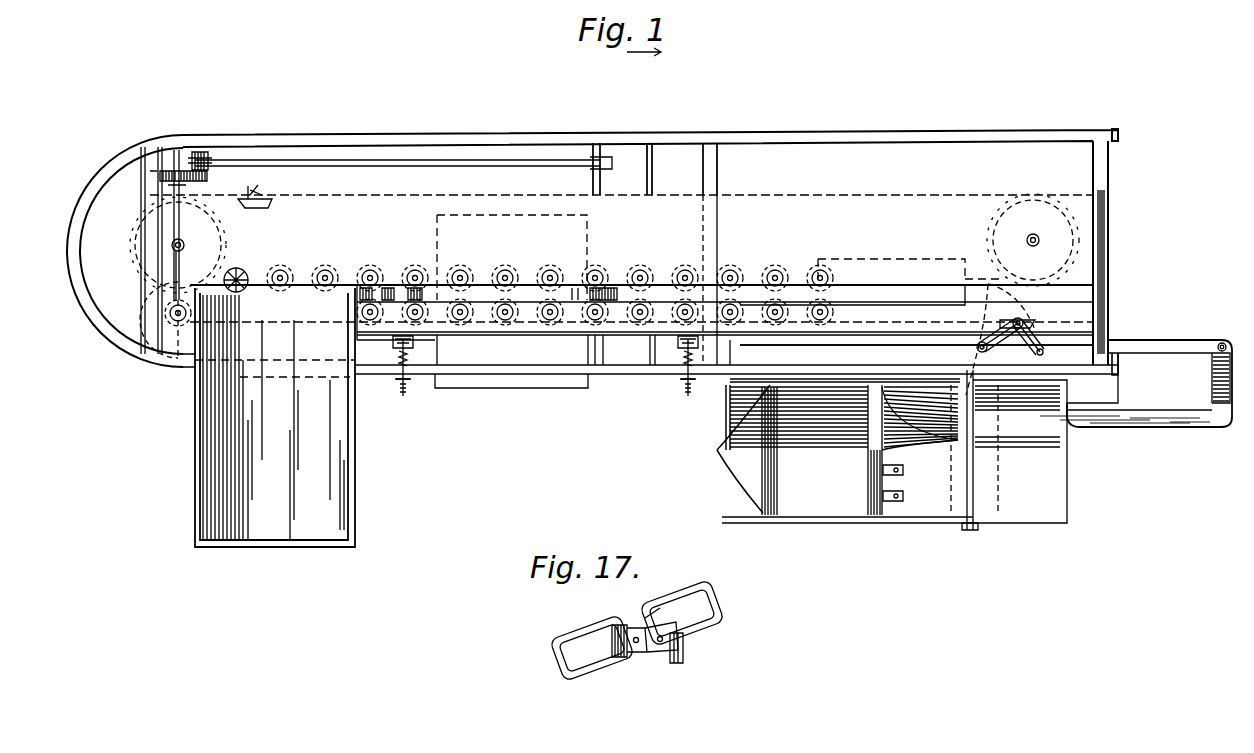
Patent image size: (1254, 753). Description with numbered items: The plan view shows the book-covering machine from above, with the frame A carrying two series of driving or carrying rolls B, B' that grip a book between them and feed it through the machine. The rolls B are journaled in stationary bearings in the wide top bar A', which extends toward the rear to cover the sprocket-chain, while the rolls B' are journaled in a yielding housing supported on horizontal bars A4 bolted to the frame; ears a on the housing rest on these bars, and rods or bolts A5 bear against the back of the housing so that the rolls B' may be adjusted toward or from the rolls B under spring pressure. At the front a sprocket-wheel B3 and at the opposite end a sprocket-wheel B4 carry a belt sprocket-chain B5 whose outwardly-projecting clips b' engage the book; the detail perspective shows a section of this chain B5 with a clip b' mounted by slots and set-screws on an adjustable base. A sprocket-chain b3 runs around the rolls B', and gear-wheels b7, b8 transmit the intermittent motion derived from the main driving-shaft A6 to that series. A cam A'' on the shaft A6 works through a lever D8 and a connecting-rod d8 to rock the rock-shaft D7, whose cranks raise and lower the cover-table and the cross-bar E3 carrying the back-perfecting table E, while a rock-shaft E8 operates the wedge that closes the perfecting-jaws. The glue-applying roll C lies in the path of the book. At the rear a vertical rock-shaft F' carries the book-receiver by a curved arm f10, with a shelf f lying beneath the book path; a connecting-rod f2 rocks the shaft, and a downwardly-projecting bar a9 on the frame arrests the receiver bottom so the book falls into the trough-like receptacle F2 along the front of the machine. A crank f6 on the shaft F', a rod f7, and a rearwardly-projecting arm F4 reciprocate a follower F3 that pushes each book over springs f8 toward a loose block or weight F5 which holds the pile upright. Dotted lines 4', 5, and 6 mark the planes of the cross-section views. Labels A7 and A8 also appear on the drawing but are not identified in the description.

In FIG. 1, the frame A is at (592, 242).
In FIG. 1, the top bar A' is at (641, 254).
In FIG. 1, the cam A'' is at (187, 183).
In FIG. 1, the horizontal bars A4 is at (399, 360).
In FIG. 1, the rod or bolt A5 is at (412, 384).
In FIG. 1, the main driving-shaft A6 is at (184, 157).
In FIG. 1, the hopper box A7 is at (322, 426).
In FIG. 1, the guide bar A8 is at (558, 358).
In FIG. 1, the ears or brackets a is at (393, 343).
In FIG. 1, the downwardly-projecting bar a9 is at (967, 490).
In FIG. 1, the driving or carrying rolls B is at (528, 267).
In FIG. 1, the driving or carrying rolls B' is at (595, 330).
In FIG. 1, the sprocket-wheel B3 is at (178, 245).
In FIG. 1, the sprocket-wheel B4 is at (1033, 240).
In FIG. 1, the sprocket-chain B5 is at (270, 197).
In FIG. 17, the sprocket-chain B5 is at (672, 602).
In FIG. 1, the fingers or clips b' is at (241, 188).
In FIG. 17, the fingers or clips b' is at (693, 648).
In FIG. 1, the sprocket-chain b3 is at (572, 322).
In FIG. 1, the gear-wheel b7 is at (179, 275).
In FIG. 1, the gear-wheel b8 is at (165, 320).
In FIG. 1, the glue-applying roll C is at (393, 292).
In FIG. 1, the rock-shaft D7 is at (601, 181).
In FIG. 1, the lever D8 is at (202, 154).
In FIG. 1, the connecting-rod d8 is at (403, 160).
In FIG. 1, the back-perfecting table E is at (740, 285).
In FIG. 1, the cross-bar E3 is at (719, 173).
In FIG. 1, the rock-shaft E8 is at (653, 180).
In FIG. 1, the rock-shaft F' is at (1042, 337).
In FIG. 1, the trough-like receptacle F2 is at (807, 503).
In FIG. 1, the follower F3 is at (880, 487).
In FIG. 1, the rearwardly-projecting arm F4 is at (1120, 424).
In FIG. 1, the block or weight F5 is at (768, 478).
In FIG. 1, the shelf f is at (850, 297).
In FIG. 1, the connecting-rod f2 is at (867, 338).
In FIG. 1, the crank f6 is at (1003, 323).
In FIG. 1, the rod f7 is at (1155, 344).
In FIG. 1, the springs f8 is at (897, 477).
In FIG. 1, the arm f10 is at (1003, 292).
In FIG. 1, the dotted line 4 4 4' is at (284, 319).
In FIG. 1, the dotted line 5 5 is at (426, 578).
In FIG. 1, the dotted line 6 6 is at (667, 0).